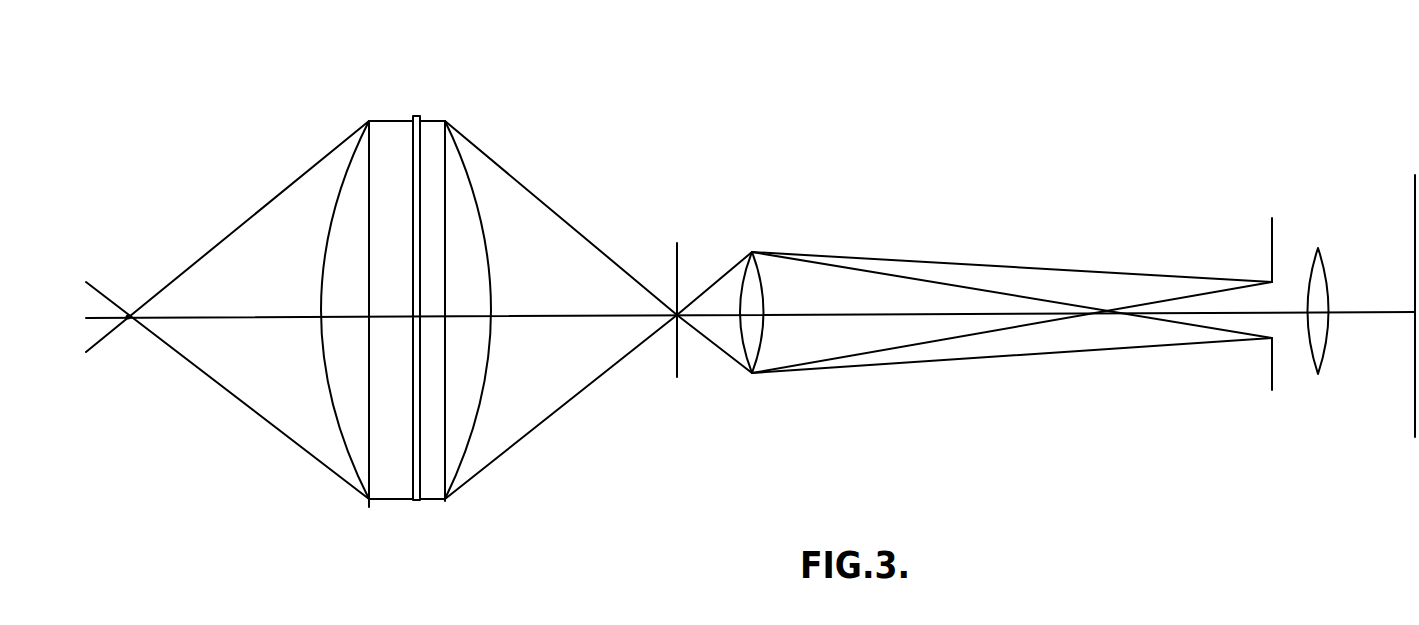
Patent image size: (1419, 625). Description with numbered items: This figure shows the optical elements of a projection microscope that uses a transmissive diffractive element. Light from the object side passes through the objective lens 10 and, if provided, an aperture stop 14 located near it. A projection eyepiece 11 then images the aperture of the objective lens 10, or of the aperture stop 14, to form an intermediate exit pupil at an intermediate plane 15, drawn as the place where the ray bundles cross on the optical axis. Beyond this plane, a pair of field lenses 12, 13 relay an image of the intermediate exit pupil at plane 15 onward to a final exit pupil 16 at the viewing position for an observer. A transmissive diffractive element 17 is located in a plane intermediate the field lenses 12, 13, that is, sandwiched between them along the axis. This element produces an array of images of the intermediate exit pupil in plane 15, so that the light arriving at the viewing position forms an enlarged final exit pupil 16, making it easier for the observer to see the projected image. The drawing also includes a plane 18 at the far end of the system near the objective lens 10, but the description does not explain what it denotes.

The objective lens 10 is at (1325, 265).
The projection eyepiece 11 is at (751, 377).
The field lens 12 is at (441, 119).
The field lens 13 is at (363, 119).
The aperture stop 14 is at (1270, 245).
The intermediate plane 15 is at (675, 258).
The final exit pupil 16 is at (128, 316).
The transmissive diffractive element 17 is at (416, 502).
The image plane 18 is at (1413, 410).